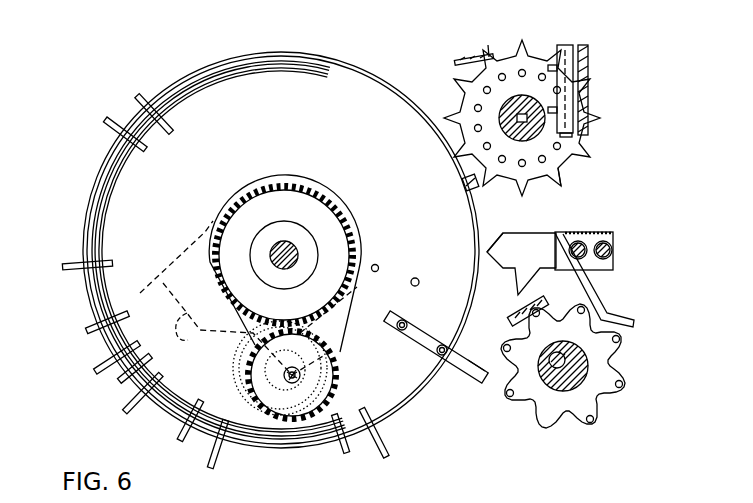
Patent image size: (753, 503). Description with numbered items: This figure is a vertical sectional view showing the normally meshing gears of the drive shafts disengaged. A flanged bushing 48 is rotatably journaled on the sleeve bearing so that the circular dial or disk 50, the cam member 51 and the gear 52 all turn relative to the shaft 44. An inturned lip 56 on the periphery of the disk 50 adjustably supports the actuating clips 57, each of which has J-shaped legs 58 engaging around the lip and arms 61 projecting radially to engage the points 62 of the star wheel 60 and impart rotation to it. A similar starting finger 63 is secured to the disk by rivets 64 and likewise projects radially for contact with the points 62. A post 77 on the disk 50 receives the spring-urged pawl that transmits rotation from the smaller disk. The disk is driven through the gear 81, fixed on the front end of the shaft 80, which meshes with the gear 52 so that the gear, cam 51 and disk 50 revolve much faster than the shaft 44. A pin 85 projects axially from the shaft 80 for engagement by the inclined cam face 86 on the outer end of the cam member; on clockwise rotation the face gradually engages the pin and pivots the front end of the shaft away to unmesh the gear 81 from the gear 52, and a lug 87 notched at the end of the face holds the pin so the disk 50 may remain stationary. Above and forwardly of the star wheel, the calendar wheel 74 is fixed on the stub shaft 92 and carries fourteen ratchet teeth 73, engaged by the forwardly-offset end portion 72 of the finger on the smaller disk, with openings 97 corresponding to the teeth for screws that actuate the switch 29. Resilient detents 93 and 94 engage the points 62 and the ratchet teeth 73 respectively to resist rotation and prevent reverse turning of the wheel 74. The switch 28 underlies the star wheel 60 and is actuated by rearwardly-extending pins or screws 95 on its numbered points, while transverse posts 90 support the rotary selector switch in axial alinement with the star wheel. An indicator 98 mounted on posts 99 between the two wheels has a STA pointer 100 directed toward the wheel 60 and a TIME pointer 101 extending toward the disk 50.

The circular dial or disk 50 is at (368, 63).
The inturned flange or rearwardly-directed lip 56 is at (255, 66).
The actuating elements or clips 57 is at (142, 115).
The J-shaped legs 58 is at (108, 232).
The arms 61 is at (96, 360).
The gear 52 is at (282, 192).
The flanged bushing 48 is at (309, 247).
The shaft 44 is at (272, 249).
The cam member 51 is at (190, 238).
The gear 81 is at (300, 420).
The shaft 80 is at (288, 380).
The pin 85 is at (300, 378).
The cam face 86 is at (192, 338).
The lug or projection 87 is at (157, 292).
The post 77 is at (415, 278).
The rivets or other fasteners 64 is at (405, 322).
The actuating element or starting finger 63 is at (466, 366).
The angular, forwardly-offset outer end portion 72 is at (463, 185).
The calendar wheel or rotary member 74 is at (463, 87).
The stub shaft 92 is at (529, 90).
The resilient detent 94 is at (487, 52).
The switch 29 is at (570, 46).
The ratchet teeth 73 is at (592, 130).
The openings 97 is at (562, 179).
The STA pointer 100 is at (540, 268).
The TIME pointer 101 is at (498, 236).
The indicator 98 is at (556, 232).
The posts 99 is at (613, 250).
The resilient detent 93 is at (606, 312).
The switch 28 is at (512, 318).
The star wheel or rotary member 60 is at (618, 360).
The transverse posts 90 is at (567, 355).
The points or teeth 62 is at (512, 400).
The pins or screws 95 is at (594, 420).